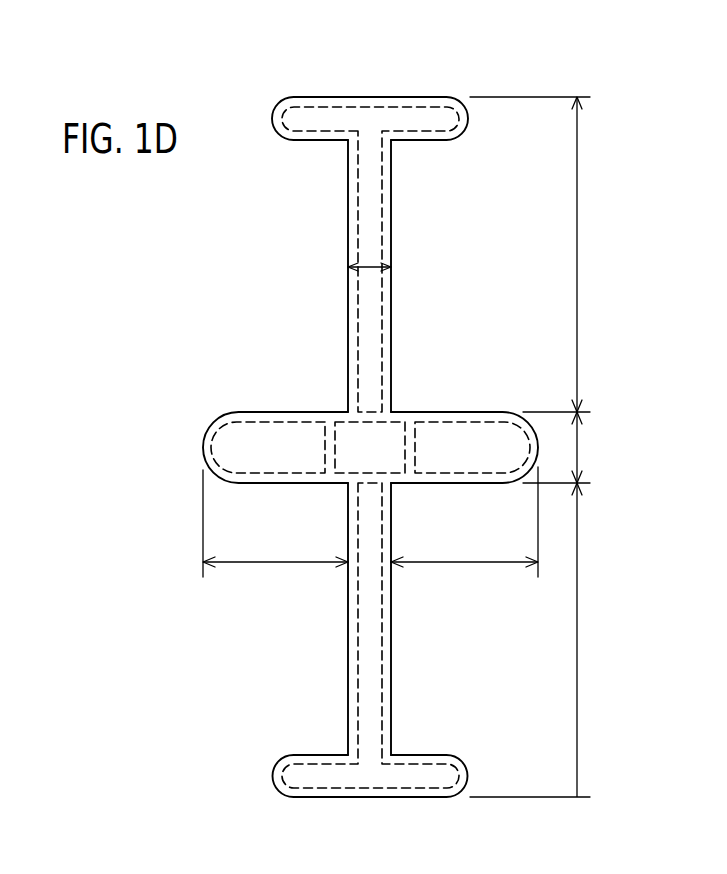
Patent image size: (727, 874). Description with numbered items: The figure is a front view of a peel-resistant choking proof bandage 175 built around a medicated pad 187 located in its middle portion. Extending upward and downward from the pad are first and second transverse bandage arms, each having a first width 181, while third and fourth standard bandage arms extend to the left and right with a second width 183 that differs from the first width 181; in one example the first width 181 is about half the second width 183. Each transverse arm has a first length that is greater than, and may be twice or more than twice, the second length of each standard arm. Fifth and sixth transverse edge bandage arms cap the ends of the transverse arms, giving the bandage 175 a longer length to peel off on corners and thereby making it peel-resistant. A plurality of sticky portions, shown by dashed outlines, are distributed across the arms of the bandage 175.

The peel-resistant choking proof bandage 175 is at (185, 240).
The first width 181 is at (370, 262).
The second width 183 is at (577, 450).
The medicated pad 187 is at (376, 473).